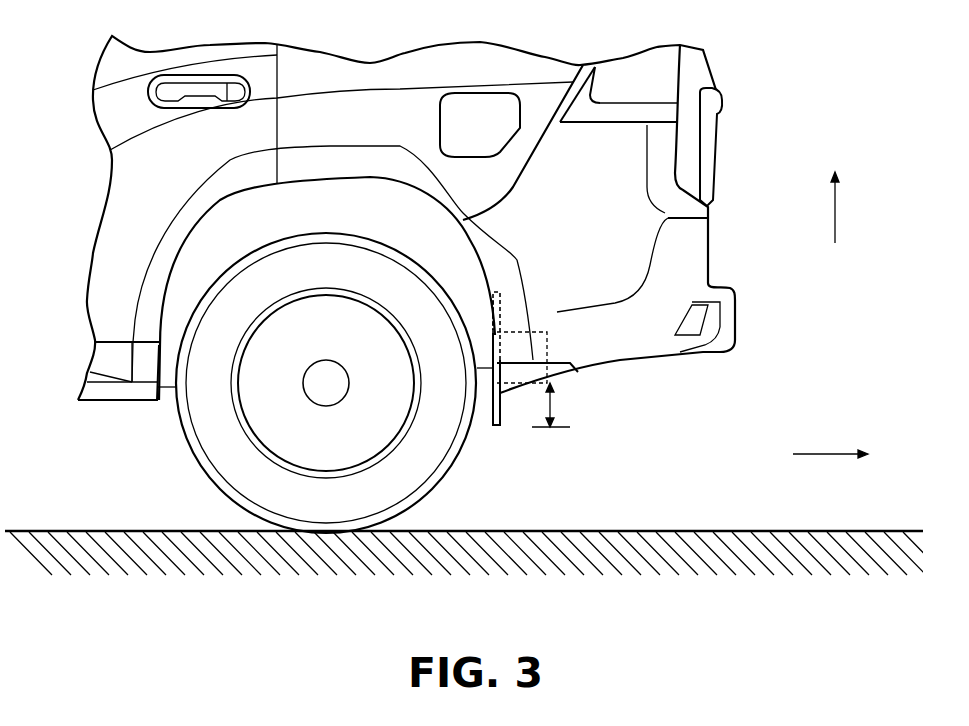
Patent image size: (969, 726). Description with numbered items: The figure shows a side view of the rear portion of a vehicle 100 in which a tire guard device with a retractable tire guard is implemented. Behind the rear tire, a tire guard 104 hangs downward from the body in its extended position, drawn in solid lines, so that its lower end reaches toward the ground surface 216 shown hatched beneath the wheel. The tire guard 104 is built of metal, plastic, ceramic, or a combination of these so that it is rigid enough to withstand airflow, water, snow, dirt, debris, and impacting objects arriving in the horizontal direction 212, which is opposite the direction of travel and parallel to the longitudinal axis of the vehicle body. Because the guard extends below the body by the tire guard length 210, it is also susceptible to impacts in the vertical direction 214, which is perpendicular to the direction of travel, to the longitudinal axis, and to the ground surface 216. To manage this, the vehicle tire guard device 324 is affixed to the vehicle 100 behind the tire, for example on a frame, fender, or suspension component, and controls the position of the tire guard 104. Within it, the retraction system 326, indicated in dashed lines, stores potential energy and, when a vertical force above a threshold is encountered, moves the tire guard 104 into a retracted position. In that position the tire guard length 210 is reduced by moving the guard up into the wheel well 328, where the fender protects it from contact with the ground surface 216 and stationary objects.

The vehicle 100 is at (625, 178).
The tire guard 104 is at (500, 413).
The tire guard length 210 is at (557, 400).
The horizontal direction 212 is at (827, 457).
The vertical direction 214 is at (835, 220).
The ground surface 216 is at (67, 530).
The vehicle tire guard device 324 is at (490, 333).
The retraction system 326 is at (547, 347).
The wheel well 328 is at (247, 232).